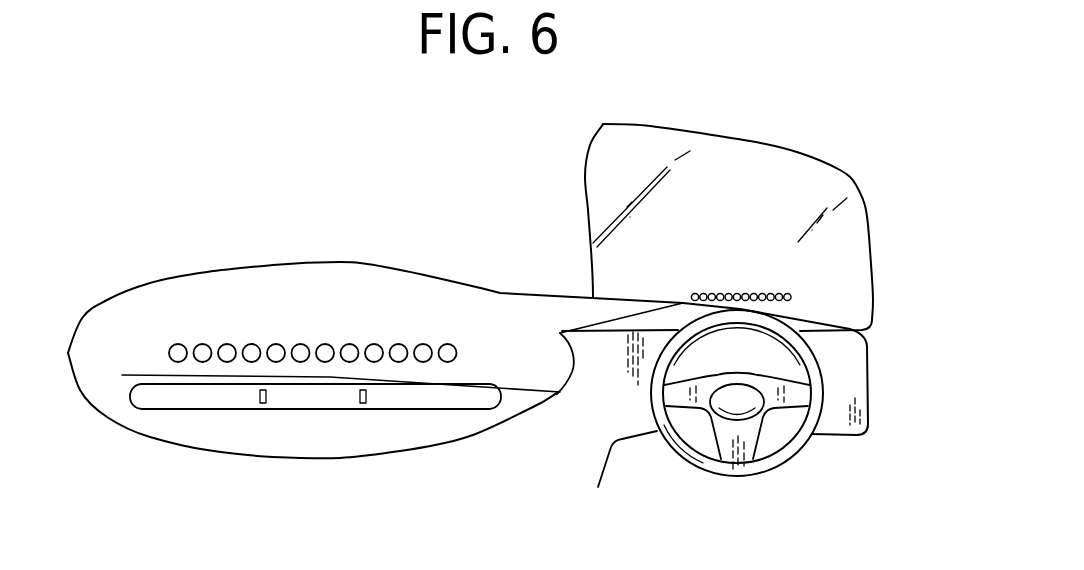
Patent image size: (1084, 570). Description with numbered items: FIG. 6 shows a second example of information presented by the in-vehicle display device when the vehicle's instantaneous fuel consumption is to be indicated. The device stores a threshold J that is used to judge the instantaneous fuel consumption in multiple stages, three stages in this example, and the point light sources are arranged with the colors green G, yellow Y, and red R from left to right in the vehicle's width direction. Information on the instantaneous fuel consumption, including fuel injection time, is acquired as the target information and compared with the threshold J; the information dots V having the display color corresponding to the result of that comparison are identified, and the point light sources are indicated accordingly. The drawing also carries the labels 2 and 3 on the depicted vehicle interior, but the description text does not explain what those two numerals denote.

The windshield 2 is at (790, 182).
The instrument panel 3 is at (163, 371).
The information dots V is at (194, 329).
The threshold J is at (400, 422).
The green G is at (690, 292).
The yellow Y is at (758, 292).
The red R is at (792, 292).